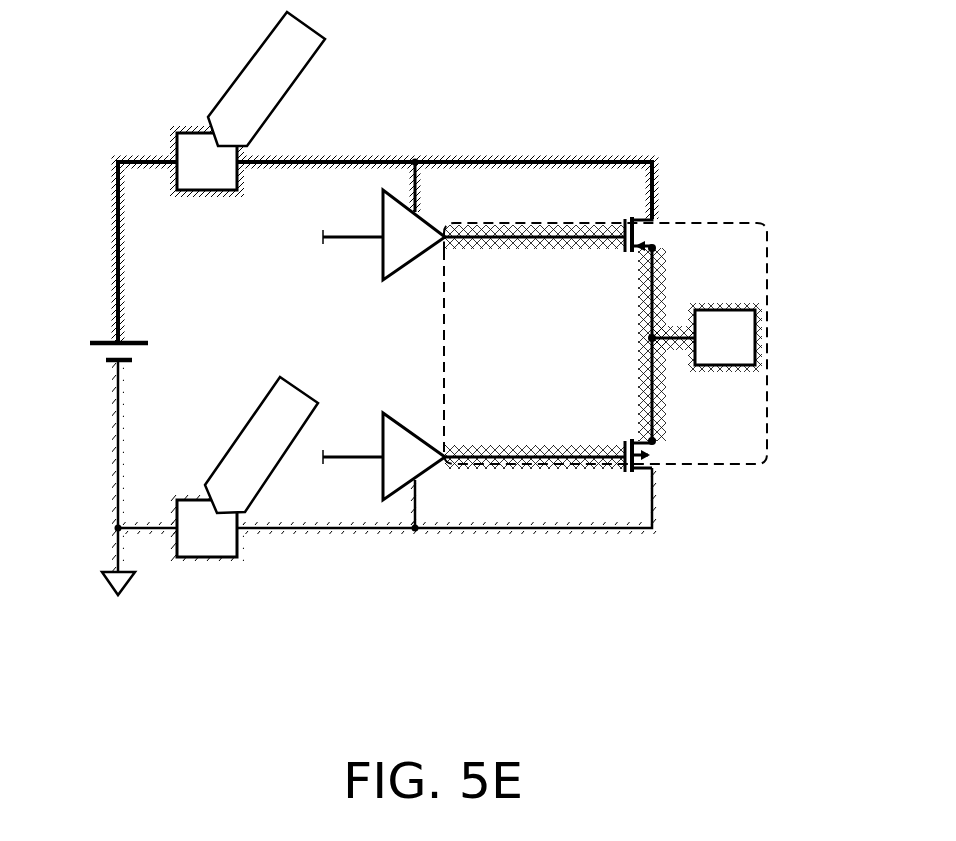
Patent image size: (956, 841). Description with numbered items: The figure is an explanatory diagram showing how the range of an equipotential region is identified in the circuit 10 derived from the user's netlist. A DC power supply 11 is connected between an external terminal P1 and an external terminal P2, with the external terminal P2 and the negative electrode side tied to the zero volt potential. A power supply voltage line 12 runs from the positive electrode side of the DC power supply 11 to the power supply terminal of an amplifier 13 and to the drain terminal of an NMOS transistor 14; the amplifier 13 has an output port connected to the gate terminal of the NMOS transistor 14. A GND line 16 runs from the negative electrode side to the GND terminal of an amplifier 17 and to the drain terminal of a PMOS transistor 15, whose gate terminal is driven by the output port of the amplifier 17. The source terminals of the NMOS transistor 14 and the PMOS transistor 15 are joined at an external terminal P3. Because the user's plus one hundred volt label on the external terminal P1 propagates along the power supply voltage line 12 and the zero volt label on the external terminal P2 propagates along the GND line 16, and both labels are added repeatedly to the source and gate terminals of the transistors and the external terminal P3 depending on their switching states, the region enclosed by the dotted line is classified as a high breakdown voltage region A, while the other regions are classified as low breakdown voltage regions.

The circuit 10 is at (741, 40).
The DC power supply 11 is at (100, 342).
The power supply voltage line 12 is at (110, 230).
The amplifier 13 is at (433, 225).
The NMOS transistor 14 is at (657, 235).
The PMOS transistor 15 is at (653, 457).
The GND line 16 is at (110, 483).
The amplifier 17 is at (433, 468).
The external terminal P1 is at (192, 128).
The external terminal P2 is at (213, 557).
The external terminal P3 is at (755, 332).
The high breakdown voltage region A is at (768, 413).